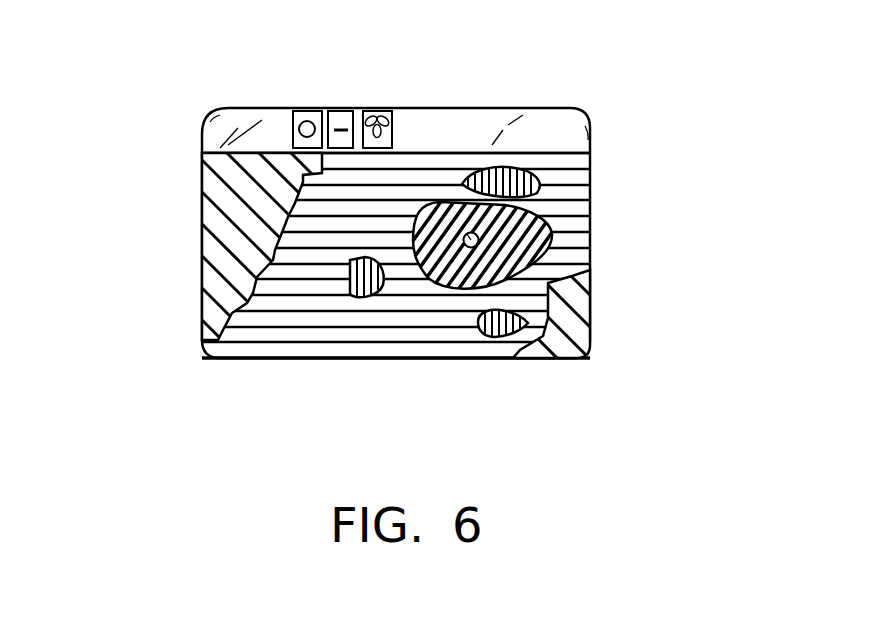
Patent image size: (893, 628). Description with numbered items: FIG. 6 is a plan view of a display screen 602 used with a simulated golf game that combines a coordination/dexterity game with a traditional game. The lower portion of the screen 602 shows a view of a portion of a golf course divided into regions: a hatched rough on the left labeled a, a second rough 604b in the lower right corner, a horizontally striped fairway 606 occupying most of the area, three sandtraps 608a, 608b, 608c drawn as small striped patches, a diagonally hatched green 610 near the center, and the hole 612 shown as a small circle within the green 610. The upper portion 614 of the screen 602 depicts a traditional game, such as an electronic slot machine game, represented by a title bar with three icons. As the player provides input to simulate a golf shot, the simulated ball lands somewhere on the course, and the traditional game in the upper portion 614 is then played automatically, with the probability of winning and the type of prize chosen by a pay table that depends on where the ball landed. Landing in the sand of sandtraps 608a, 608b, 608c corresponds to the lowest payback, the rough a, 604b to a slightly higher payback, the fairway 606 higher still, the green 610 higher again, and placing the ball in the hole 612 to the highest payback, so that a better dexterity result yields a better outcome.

The screen 602 is at (597, 168).
The fairway 606 is at (573, 232).
The upper portion of the screen 614 is at (280, 118).
The left hatched display region a is at (230, 232).
The rough 604b is at (575, 298).
The green 610 is at (428, 272).
The hole 612 is at (471, 232).
The sandtrap 608a is at (533, 170).
The sandtrap 608b is at (352, 286).
The sandtrap 608c is at (480, 328).